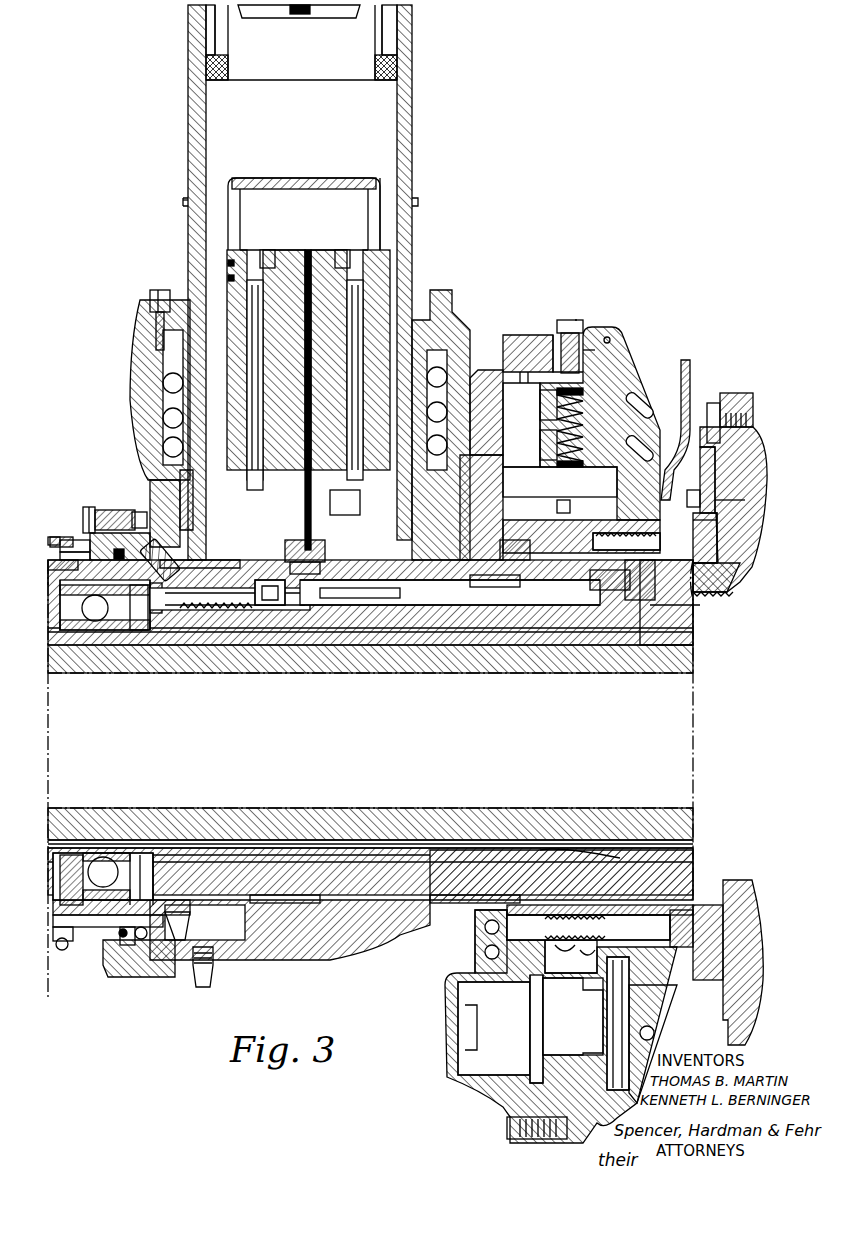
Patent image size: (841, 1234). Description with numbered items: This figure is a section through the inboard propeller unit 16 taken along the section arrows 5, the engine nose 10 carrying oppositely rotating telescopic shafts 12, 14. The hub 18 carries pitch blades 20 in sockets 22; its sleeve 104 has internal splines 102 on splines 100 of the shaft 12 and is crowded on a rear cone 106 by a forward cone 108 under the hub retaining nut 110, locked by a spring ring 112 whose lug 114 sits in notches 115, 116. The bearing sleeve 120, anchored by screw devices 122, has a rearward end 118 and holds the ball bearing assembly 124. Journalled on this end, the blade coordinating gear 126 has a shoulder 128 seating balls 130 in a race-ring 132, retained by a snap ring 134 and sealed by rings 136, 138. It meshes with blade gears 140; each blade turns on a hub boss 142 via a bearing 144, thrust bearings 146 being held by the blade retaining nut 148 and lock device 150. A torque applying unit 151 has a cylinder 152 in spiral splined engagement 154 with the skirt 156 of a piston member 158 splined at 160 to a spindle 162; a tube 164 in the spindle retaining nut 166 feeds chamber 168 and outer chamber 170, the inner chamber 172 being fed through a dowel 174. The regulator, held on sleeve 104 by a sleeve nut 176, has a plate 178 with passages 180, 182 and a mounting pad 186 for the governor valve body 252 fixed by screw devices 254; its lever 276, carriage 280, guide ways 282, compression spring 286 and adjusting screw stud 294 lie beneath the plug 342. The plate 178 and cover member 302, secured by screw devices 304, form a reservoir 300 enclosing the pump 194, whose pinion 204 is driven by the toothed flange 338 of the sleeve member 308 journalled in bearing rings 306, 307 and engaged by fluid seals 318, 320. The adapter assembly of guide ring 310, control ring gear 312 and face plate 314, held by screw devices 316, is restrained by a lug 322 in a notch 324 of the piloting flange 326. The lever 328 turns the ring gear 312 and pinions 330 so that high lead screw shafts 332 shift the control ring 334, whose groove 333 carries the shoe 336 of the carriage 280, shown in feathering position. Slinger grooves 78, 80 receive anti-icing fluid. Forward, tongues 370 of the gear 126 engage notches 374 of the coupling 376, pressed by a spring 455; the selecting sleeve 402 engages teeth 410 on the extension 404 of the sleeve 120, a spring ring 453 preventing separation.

The section line 5 is at (538, 266).
The engine nose 10 is at (752, 446).
The radially outer shaft 12 is at (410, 858).
The radially inner shaft 14 is at (410, 652).
The inboard propeller unit 16 is at (160, 230).
The hub 18 is at (120, 515).
The controllable pitch blades 20 is at (188, 128).
The blade sockets 22 is at (138, 354).
The slinger groove 78 is at (658, 1012).
The slinger groove 80 is at (654, 1040).
The splines 100 is at (592, 848).
The internal splines 102 is at (560, 610).
The sleeve 104 is at (584, 610).
The rear cone 106 is at (698, 628).
The forward cone 108 is at (348, 652).
The hub retaining nut 110 is at (290, 652).
The spring ring 112 is at (200, 875).
The lug 114 is at (142, 652).
The notch 115 is at (160, 652).
The notch 116 is at (176, 652).
The rearwardly extending end 118 is at (262, 950).
The hub cover and bearing sleeve 120 is at (88, 545).
The screw devices 122 is at (100, 515).
The ball bearing assembly 124 is at (94, 652).
The blade coordinating gear 126 is at (142, 520).
The shoulder 128 is at (128, 965).
The balls 130 is at (142, 940).
The race-ring 132 is at (118, 960).
The snap ring 134 is at (80, 555).
The sealing ring 136 is at (108, 515).
The sealing ring 138 is at (172, 915).
The blade gears 140 is at (190, 560).
The hub boss 142 is at (268, 652).
The bearing 144 is at (420, 535).
The stack of bearings 146 is at (162, 388).
The blade retaining nut 148 is at (152, 330).
The lock device 150 is at (152, 300).
The torque applying unit 151 is at (378, 228).
The cylinder 152 is at (232, 282).
The spiral splined engagement 154 is at (228, 403).
The skirt 156 is at (258, 472).
The piston member 158 is at (252, 260).
The splined engagement 160 is at (262, 452).
The spindle 162 is at (262, 440).
The tube 164 is at (312, 262).
The spindle retaining nut 166 is at (326, 496).
The chamber 168 is at (318, 566).
The chamber 170 is at (252, 195).
The chamber 172 is at (324, 440).
The dowels 174 is at (590, 330).
The sleeve nut 176 is at (672, 610).
The regulator plate 178 is at (462, 610).
The tubular passage 180 is at (480, 935).
The tubular passage 182 is at (492, 960).
The mounting pad 186 is at (488, 380).
The pump 194 is at (446, 1040).
The pinion 204 is at (606, 1082).
The body 252 is at (526, 380).
The screw devices 254 is at (544, 400).
The lever 276 is at (585, 470).
The carriage 280 is at (560, 482).
The guide ways 282 is at (540, 472).
The compression spring 286 is at (588, 420).
The screw stud 294 is at (596, 336).
The reservoir 300 is at (612, 386).
The cover member 302 is at (622, 352).
The screw devices 304 is at (506, 1124).
The bearing ring 306 is at (522, 610).
The bearing ring 307 is at (636, 610).
The sleeve member 308 is at (604, 610).
The guide ring 310 is at (698, 610).
The control ring gear 312 is at (745, 545).
The face plate 314 is at (700, 908).
The screw devices 316 is at (730, 575).
The fluid seal 318 is at (500, 610).
The fluid seal 320 is at (700, 518).
The lug 322 is at (735, 494).
The notch 324 is at (690, 490).
The piloting flange 326 is at (745, 460).
The lever 328 is at (688, 366).
The pinions 330 is at (690, 925).
The high lead screw shafts 332 is at (693, 935).
The groove 333 is at (552, 955).
The control ring 334 is at (606, 548).
The shoe 336 is at (546, 505).
The toothed flange 338 is at (590, 990).
The plug 342 is at (572, 322).
The long tongues 370 is at (54, 938).
The notches 374 is at (56, 922).
The coupling sleeve 376 is at (52, 575).
The selecting sleeve 402 is at (48, 545).
The tubular extension 404 is at (50, 566).
The teeth 410 is at (50, 548).
The spring ring 453 is at (60, 948).
The spring 455 is at (62, 905).